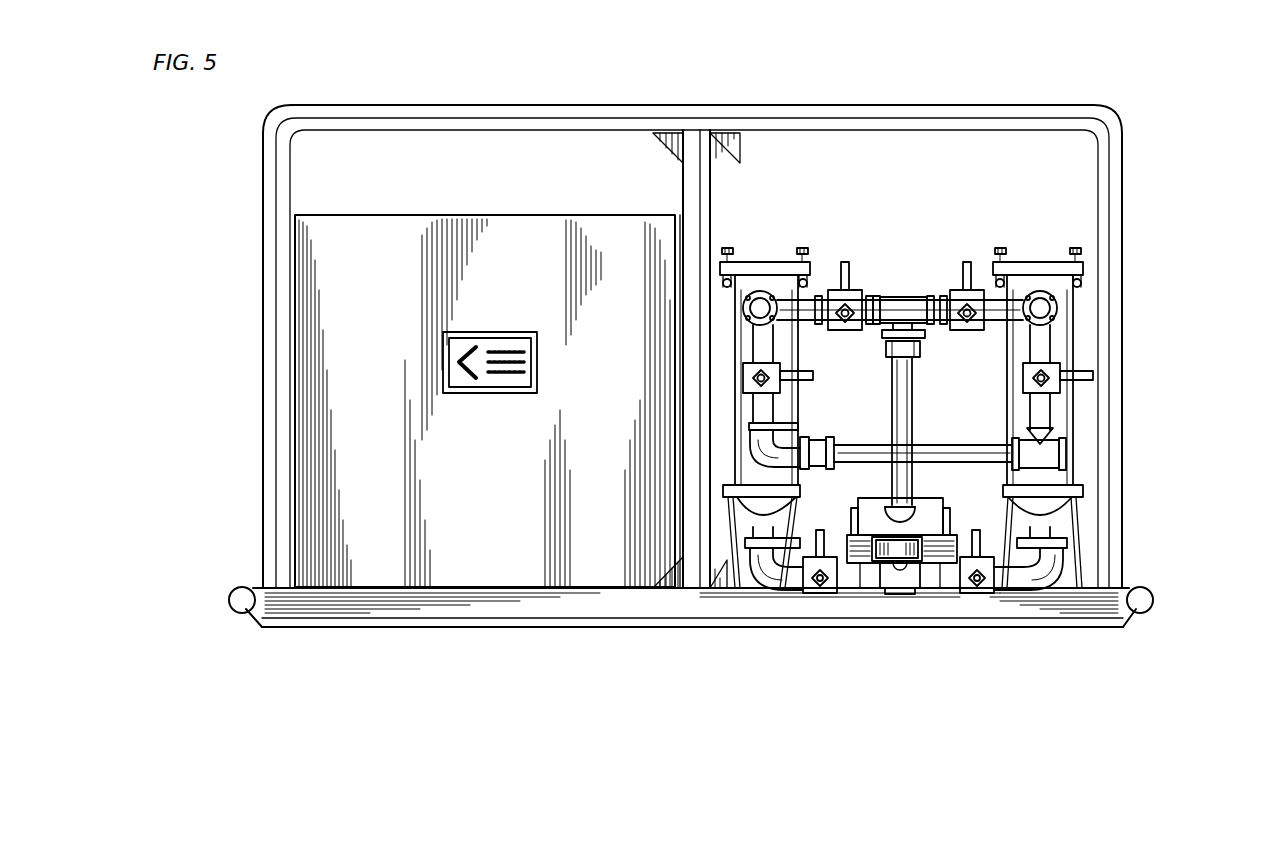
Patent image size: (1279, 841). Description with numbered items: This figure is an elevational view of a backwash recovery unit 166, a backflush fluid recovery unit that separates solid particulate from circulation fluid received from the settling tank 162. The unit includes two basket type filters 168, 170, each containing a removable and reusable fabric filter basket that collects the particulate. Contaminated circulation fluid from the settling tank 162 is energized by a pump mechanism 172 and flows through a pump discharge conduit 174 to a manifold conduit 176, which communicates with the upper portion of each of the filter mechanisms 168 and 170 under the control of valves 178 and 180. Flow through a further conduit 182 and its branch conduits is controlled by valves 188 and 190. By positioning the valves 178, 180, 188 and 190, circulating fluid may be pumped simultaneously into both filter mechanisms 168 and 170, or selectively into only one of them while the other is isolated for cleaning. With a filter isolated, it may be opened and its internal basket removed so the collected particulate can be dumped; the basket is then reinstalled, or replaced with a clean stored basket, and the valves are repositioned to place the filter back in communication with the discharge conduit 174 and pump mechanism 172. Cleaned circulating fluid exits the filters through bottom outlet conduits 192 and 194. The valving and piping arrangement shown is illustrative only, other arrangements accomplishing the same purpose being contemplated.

The settling tank 162 is at (374, 258).
The backwash recovery unit 166 is at (904, 275).
The basket type filter 168 is at (1034, 262).
The basket type filter 170 is at (762, 260).
The pump mechanism 172 is at (868, 572).
The pump discharge conduit 174 is at (907, 408).
The manifold conduit 176 is at (836, 302).
The valve 178 is at (1052, 310).
The valve 180 is at (750, 311).
The conduit 182 is at (972, 452).
The valve 188 is at (1058, 369).
The valve 190 is at (752, 381).
The bottom outlet conduit 192 is at (1080, 540).
The bottom outlet conduit 194 is at (757, 560).